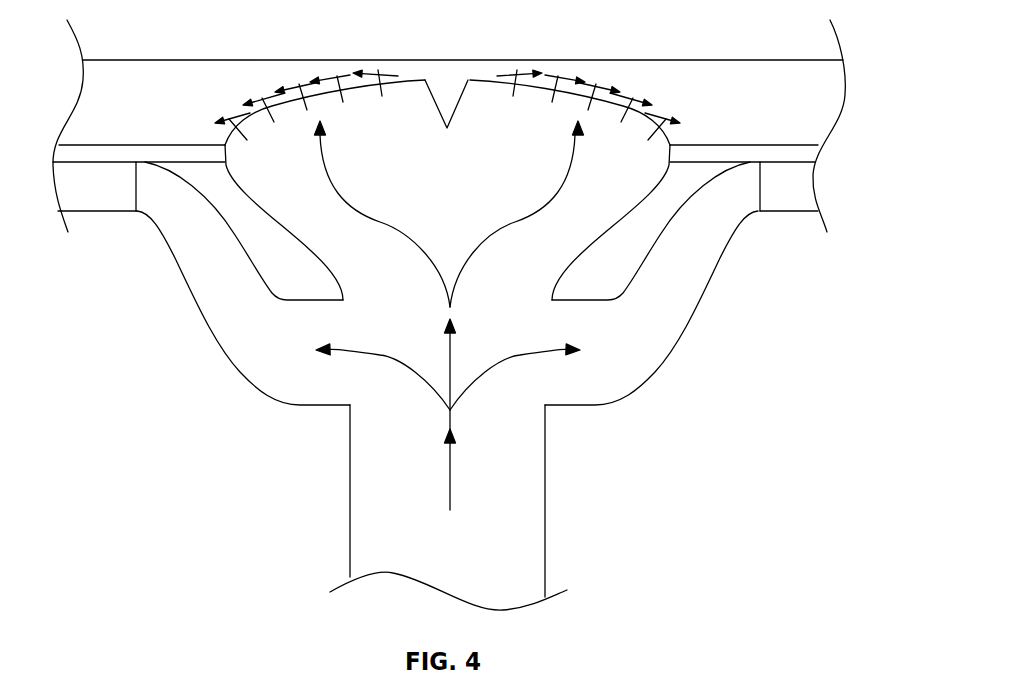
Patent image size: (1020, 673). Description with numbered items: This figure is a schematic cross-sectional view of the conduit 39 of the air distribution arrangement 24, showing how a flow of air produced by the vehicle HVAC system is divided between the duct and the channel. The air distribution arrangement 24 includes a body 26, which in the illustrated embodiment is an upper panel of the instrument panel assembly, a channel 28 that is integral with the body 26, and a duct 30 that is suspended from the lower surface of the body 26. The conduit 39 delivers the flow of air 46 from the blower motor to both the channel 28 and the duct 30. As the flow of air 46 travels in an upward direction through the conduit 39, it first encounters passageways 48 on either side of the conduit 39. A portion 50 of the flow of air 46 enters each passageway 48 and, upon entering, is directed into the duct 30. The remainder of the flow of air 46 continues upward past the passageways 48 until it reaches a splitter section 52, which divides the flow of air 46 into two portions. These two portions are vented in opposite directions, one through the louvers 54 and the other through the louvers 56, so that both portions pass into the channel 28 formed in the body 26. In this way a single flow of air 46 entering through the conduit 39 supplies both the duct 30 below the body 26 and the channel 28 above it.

The air distribution arrangement 24 is at (655, 672).
The body 26 is at (693, 160).
The channel 28 is at (762, 58).
The duct 30 is at (103, 213).
The conduit 39 is at (545, 507).
The flow of air 46 is at (450, 477).
The passageway 48 is at (240, 370).
The portion of flow of air 50 is at (340, 353).
The splitter section 52 is at (482, 85).
The louver 54 is at (593, 88).
The louver 56 is at (238, 115).